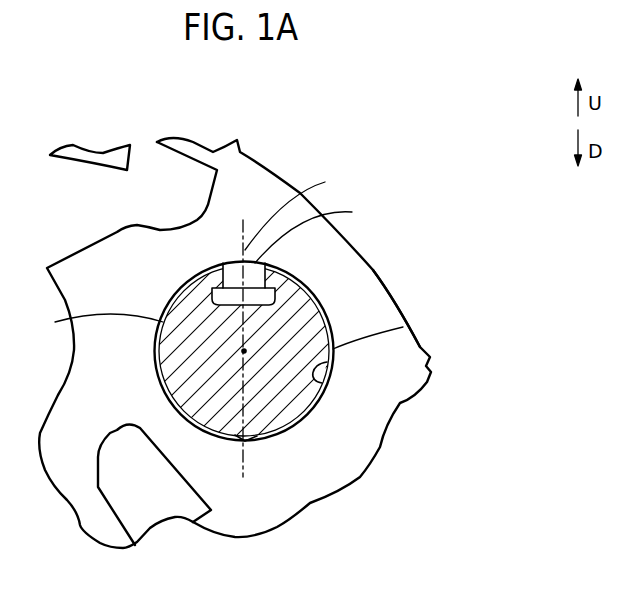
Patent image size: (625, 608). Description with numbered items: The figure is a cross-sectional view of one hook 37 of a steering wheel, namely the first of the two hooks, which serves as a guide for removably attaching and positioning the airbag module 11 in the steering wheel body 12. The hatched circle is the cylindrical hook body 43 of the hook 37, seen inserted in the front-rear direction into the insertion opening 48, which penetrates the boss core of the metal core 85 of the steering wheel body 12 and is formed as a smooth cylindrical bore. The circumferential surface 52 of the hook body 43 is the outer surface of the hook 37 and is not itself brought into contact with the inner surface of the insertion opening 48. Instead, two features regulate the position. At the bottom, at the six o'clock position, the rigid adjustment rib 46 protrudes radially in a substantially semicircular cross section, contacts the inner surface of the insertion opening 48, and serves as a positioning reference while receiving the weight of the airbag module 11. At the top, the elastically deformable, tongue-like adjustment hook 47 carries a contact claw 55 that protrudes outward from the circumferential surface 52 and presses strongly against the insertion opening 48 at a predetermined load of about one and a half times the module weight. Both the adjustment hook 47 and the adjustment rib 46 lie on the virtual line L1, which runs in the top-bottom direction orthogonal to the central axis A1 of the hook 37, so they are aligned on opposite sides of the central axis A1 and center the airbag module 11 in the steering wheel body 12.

The airbag module 11 is at (330, 320).
The steering wheel body 12 is at (273, 167).
The hook 37 is at (300, 403).
The hook body 43 is at (197, 428).
The adjustment rib 46 is at (250, 437).
The adjustment hook 47 is at (352, 212).
The insertion opening 48 is at (403, 327).
The circumferential surface 52 is at (56, 322).
The contact claw 55 is at (231, 262).
The core 85 is at (372, 263).
The central axis A1 is at (244, 351).
The virtual line L1 is at (298, 210).